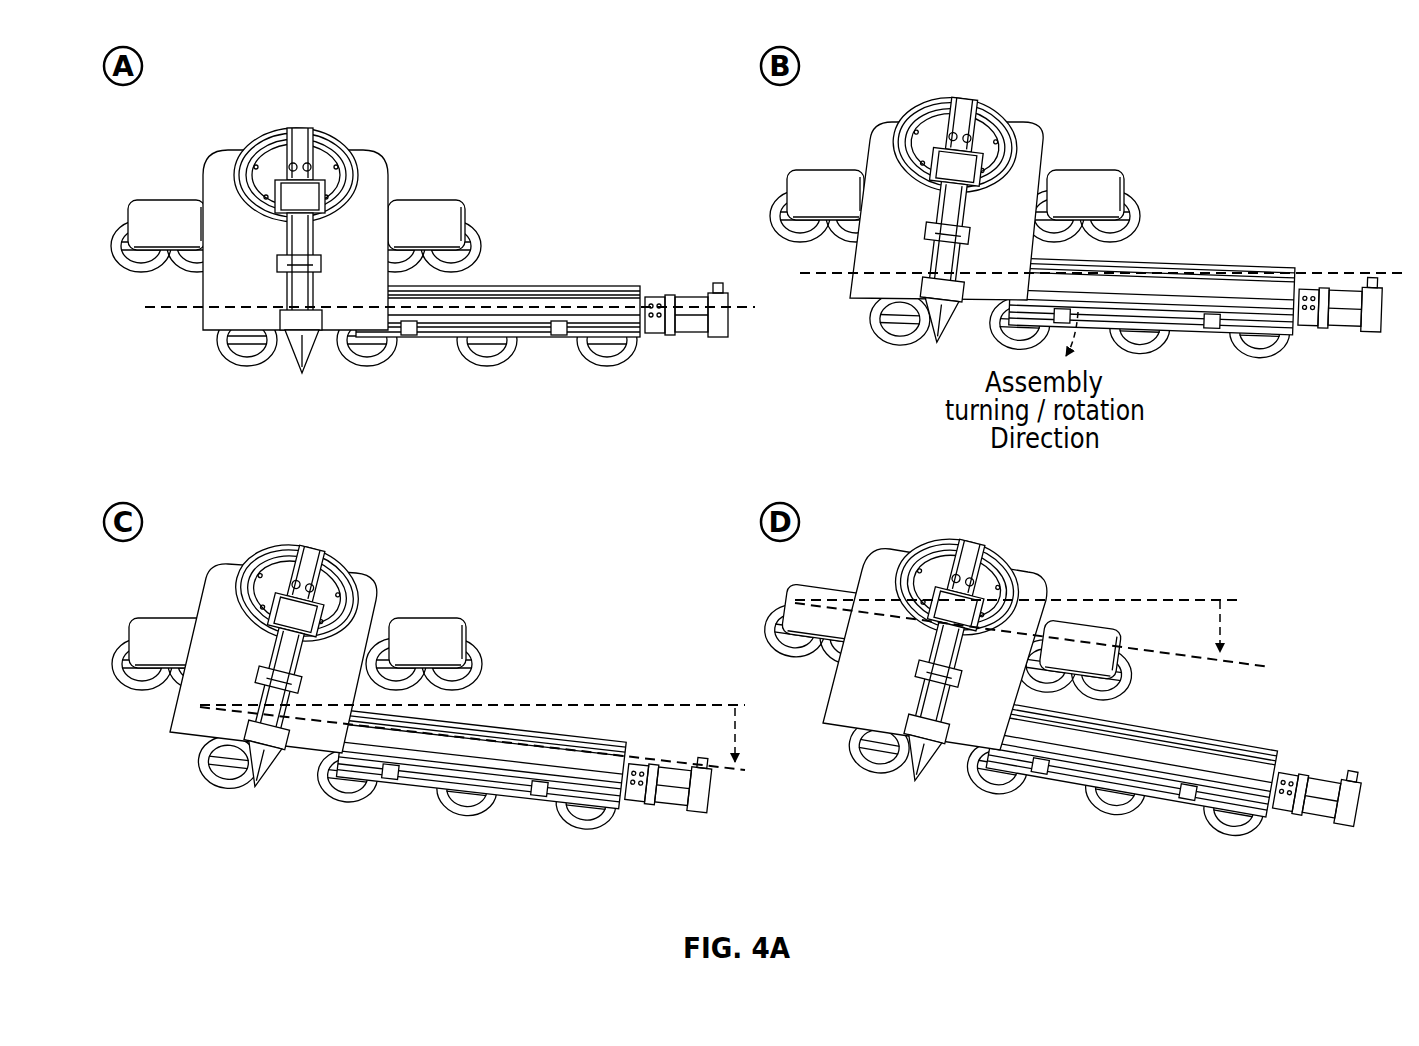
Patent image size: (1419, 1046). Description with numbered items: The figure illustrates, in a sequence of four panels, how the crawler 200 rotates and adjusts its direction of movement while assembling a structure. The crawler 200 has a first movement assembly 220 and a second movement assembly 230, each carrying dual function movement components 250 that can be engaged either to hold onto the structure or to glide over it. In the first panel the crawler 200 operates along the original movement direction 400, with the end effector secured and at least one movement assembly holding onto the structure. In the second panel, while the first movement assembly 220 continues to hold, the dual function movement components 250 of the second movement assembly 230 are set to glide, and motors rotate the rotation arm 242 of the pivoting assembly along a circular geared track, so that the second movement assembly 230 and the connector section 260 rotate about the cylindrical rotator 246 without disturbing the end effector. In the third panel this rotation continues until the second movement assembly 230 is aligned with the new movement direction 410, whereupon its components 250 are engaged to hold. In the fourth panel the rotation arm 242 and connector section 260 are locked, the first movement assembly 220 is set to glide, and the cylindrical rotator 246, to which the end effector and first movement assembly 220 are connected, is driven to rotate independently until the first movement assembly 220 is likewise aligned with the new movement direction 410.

The crawler 200 is at (252, 122).
The first movement assembly 220 is at (445, 205).
The second movement assembly 230 is at (570, 300).
The rotation arm 242 is at (318, 278).
The cylindrical rotator 246 is at (347, 178).
The dual function movement component 250 is at (503, 352).
The connector section 260 is at (362, 282).
The original movement direction (axis) 400 is at (170, 315).
The new movement direction (axis) 410 is at (728, 780).